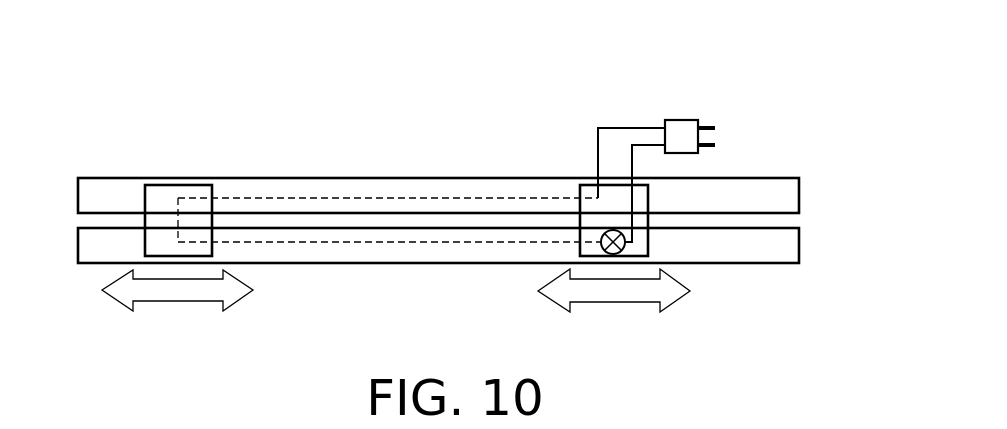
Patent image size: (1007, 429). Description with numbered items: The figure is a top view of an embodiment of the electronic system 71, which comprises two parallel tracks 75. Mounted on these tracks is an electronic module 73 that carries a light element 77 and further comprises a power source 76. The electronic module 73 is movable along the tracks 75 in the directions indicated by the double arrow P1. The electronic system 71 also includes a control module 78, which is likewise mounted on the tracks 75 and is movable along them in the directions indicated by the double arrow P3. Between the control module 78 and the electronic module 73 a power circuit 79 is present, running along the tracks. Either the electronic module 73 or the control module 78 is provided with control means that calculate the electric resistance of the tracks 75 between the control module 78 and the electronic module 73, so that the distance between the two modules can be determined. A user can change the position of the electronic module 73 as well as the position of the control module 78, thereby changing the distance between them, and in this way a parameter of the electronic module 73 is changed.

The electronic system 71 is at (91, 85).
The electronic module 73 is at (593, 221).
The tracks 75 is at (113, 188).
The power source 76 is at (683, 128).
The light element 77 is at (623, 247).
The control module 78 is at (198, 192).
The power circuit 79 is at (388, 198).
The double arrow P1 is at (617, 297).
The double arrow P3 is at (173, 297).